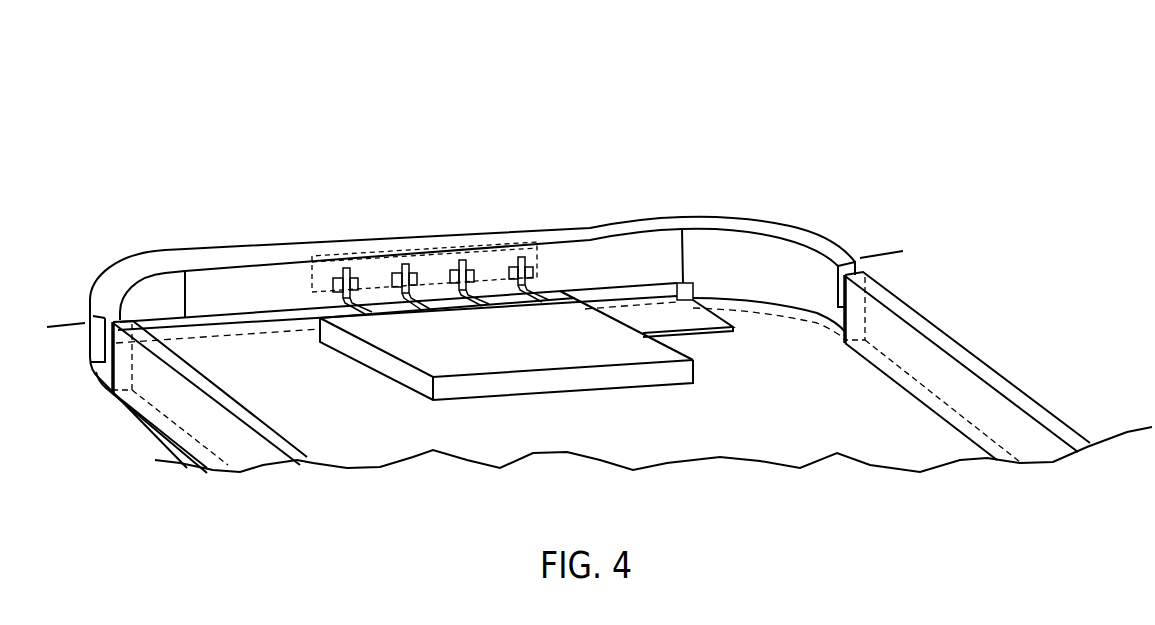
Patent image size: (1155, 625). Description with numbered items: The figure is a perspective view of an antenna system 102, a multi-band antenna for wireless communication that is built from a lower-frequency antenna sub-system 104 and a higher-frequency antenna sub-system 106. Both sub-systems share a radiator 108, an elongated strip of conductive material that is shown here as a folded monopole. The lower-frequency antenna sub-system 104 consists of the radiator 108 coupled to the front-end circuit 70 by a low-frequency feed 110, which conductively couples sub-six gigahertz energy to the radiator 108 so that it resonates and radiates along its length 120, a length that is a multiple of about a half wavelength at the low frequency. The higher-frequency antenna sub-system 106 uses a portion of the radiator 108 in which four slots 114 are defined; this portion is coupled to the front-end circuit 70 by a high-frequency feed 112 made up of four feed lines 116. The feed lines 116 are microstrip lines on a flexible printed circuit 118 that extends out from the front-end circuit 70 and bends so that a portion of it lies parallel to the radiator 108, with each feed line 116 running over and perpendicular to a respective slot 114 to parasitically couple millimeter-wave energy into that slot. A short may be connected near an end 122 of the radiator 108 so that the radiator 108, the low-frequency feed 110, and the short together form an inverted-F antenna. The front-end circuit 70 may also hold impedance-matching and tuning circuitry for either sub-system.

The front-end circuit 70 is at (556, 394).
The antenna system 102 is at (845, 60).
The lower-frequency antenna sub-system 104 is at (720, 184).
The higher-frequency antenna sub-system 106 is at (300, 186).
The radiator 108 is at (62, 326).
The low-frequency feed 110 is at (727, 331).
The high-frequency feed 112 is at (328, 300).
The slots 114 is at (318, 280).
The feed lines 116 is at (462, 262).
The flexible printed circuit 118 is at (500, 240).
The length 120 is at (826, 236).
The end 122 is at (860, 292).